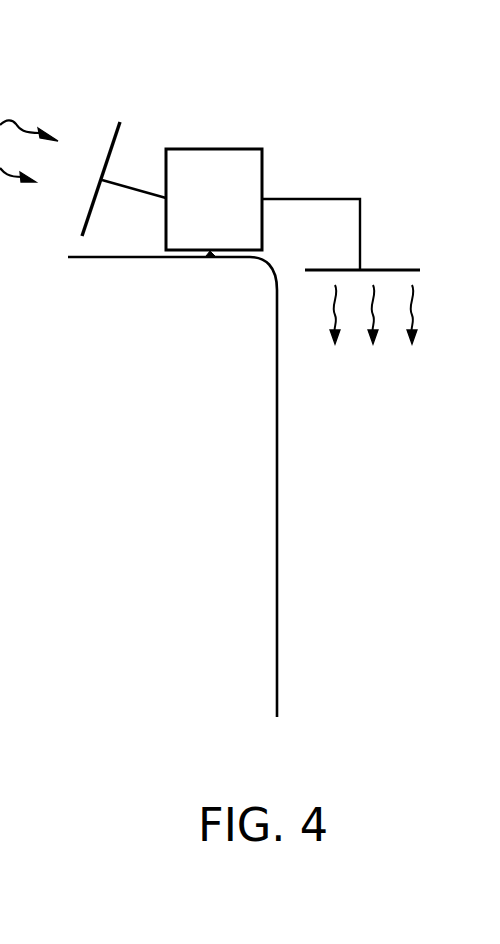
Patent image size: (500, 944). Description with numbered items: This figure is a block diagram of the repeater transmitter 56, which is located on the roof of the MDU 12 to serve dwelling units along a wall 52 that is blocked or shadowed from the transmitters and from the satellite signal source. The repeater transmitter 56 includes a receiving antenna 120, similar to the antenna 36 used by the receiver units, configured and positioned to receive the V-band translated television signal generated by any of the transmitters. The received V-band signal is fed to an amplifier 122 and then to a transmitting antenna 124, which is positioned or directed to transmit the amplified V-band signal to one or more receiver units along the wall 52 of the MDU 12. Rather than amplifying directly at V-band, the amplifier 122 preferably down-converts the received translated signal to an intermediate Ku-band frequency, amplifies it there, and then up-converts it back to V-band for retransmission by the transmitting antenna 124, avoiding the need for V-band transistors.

The MDU 12 is at (82, 368).
The wall 52 is at (277, 463).
The receiving antenna 120 is at (110, 139).
The amplifier 122 is at (222, 158).
The transmitting antenna 124 is at (405, 268).
The repeater transmitter 56 is at (360, 79).
The antenna 36 is at (0, 631).